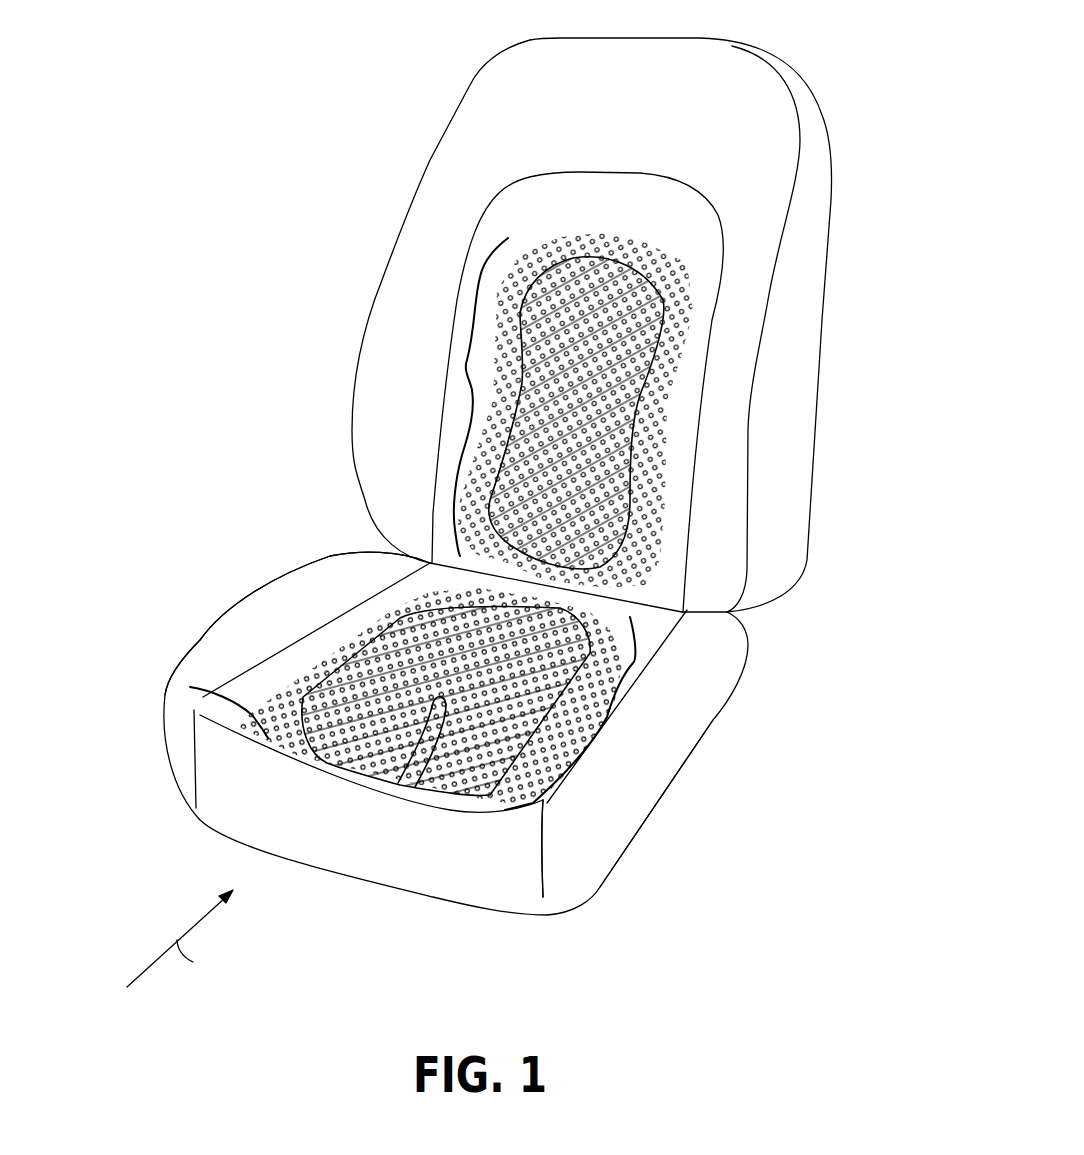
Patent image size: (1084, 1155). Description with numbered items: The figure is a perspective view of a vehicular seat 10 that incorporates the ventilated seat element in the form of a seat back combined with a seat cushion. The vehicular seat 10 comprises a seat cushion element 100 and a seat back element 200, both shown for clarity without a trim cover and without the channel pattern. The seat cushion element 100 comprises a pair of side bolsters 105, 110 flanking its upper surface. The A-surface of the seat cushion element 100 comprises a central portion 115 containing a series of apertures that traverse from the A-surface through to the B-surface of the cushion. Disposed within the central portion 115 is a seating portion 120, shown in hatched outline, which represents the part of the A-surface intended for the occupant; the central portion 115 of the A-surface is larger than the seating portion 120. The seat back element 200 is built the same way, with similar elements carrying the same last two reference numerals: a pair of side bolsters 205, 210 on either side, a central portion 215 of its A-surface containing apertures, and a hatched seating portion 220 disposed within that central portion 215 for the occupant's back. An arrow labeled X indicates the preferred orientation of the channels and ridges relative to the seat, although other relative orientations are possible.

The vehicular seat 10 is at (292, 200).
The seat cushion element 100 is at (703, 752).
The side bolster 105 is at (267, 600).
The side bolster 110 is at (545, 795).
The central portion 115 is at (627, 690).
The seating portion 120 is at (200, 690).
The seat back element 200 is at (830, 147).
The side bolster 205 is at (390, 320).
The side bolster 210 is at (727, 390).
The central portion 215 is at (463, 370).
The seating portion 220 is at (660, 300).